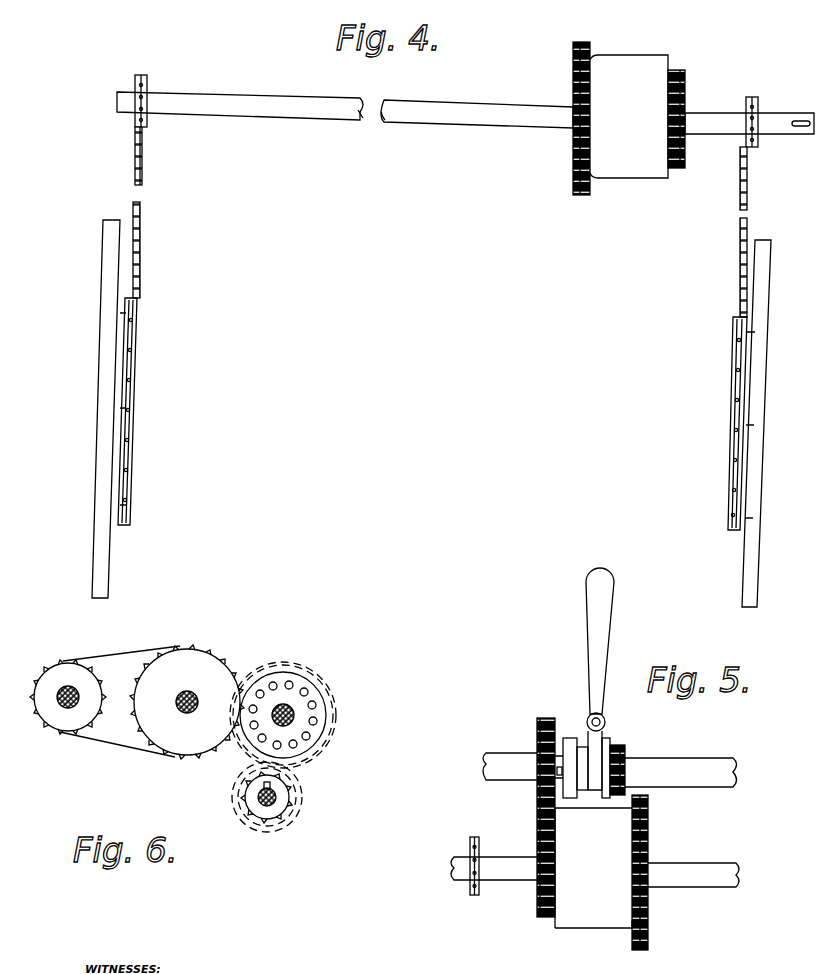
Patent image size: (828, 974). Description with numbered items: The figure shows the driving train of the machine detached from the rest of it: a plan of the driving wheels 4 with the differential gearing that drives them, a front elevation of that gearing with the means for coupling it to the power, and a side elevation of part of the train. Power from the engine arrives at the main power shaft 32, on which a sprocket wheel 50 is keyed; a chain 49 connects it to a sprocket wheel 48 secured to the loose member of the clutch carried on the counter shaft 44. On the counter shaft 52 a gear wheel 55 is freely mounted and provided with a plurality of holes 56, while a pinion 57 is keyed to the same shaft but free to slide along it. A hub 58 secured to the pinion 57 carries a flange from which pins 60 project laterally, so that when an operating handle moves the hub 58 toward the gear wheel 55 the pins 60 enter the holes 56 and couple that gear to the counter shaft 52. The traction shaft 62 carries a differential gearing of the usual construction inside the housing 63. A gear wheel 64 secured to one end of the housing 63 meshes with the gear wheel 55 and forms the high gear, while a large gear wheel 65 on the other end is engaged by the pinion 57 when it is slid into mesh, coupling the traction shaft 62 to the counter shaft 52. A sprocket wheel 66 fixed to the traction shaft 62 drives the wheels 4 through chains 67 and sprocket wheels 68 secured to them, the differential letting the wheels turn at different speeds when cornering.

In FIG. 4, the driving wheels 4 is at (100, 447).
In FIG. 6, the main power shaft 32 is at (68, 706).
In FIG. 6, the counter shaft 44 is at (188, 714).
In FIG. 6, the sprocket wheel 48 is at (214, 670).
In FIG. 6, the chain 49 is at (120, 654).
In FIG. 6, the sprocket wheel 50 is at (47, 704).
In FIG. 5, the counter shaft 52 is at (510, 765).
In FIG. 6, the counter shaft 52 is at (283, 705).
In FIG. 5, the gear wheel 55 is at (535, 792).
In FIG. 6, the gear wheel 55 is at (312, 675).
In FIG. 6, the holes 56 is at (313, 732).
In FIG. 5, the pinion 57 is at (612, 750).
In FIG. 5, the hub 58 is at (580, 744).
In FIG. 5, the pins 60 is at (559, 776).
In FIG. 4, the traction shaft 62 is at (280, 115).
In FIG. 5, the traction shaft 62 is at (707, 880).
In FIG. 6, the traction shaft 62 is at (274, 798).
In FIG. 4, the housing 63 is at (630, 178).
In FIG. 5, the housing 63 is at (583, 930).
In FIG. 4, the gear wheel 64 is at (676, 170).
In FIG. 5, the gear wheel 64 is at (535, 920).
In FIG. 6, the gear wheel 64 is at (300, 788).
In FIG. 4, the large gear wheel 65 is at (572, 200).
In FIG. 5, the large gear wheel 65 is at (653, 830).
In FIG. 4, the sprocket wheel 66 is at (147, 126).
In FIG. 5, the sprocket wheel 66 is at (472, 893).
In FIG. 6, the sprocket wheel 66 is at (270, 813).
In FIG. 4, the chains 67 is at (141, 225).
In FIG. 4, the sprocket wheels 68 is at (137, 401).